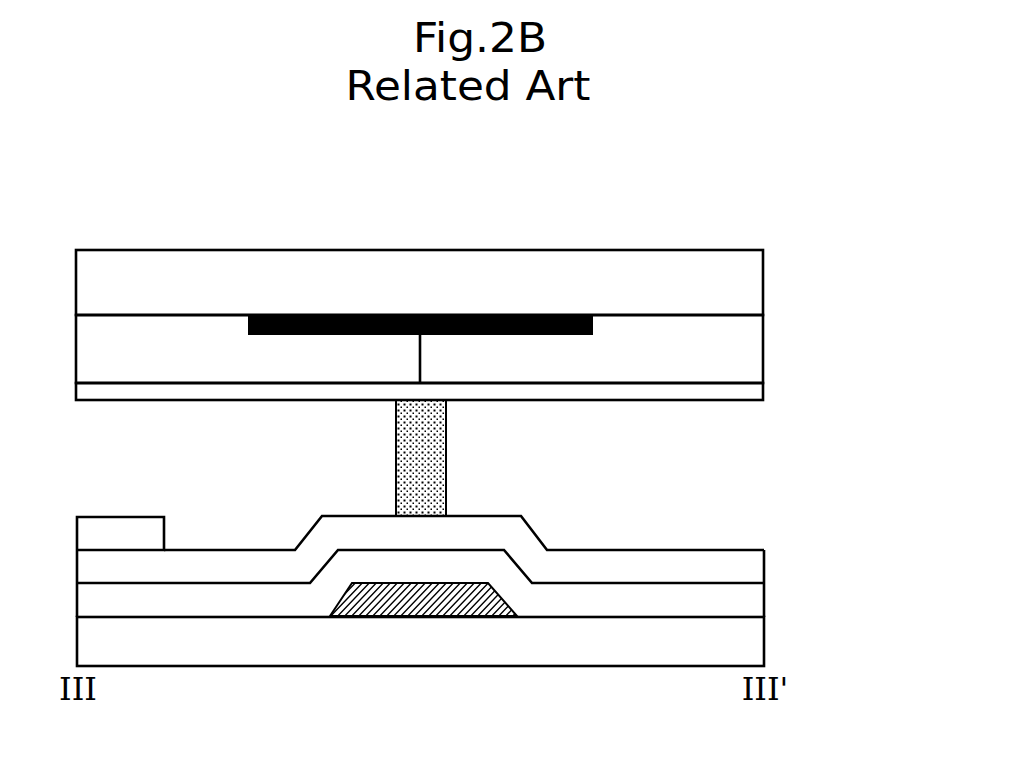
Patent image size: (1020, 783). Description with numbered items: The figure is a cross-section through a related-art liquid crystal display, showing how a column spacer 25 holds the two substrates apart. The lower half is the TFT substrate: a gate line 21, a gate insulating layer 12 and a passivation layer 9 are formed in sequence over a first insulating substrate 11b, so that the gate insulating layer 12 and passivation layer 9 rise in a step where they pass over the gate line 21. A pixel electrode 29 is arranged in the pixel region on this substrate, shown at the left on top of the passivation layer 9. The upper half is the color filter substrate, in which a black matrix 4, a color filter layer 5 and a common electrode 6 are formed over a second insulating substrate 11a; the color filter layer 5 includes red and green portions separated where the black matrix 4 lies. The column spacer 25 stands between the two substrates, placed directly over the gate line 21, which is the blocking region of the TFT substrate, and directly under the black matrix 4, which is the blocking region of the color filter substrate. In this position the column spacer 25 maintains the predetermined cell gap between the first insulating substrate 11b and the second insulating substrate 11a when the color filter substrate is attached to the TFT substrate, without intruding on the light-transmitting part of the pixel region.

The black matrix 4 is at (486, 315).
The color filter layer 5 is at (763, 350).
The common electrode 6 is at (763, 387).
The passivation layer 9 is at (764, 565).
The second insulating substrate 11a is at (763, 283).
The first insulating substrate 11b is at (764, 640).
The gate insulating layer 12 is at (764, 598).
The gate line 21 is at (421, 600).
The column spacer 25 is at (440, 451).
The pixel electrode 29 is at (120, 527).